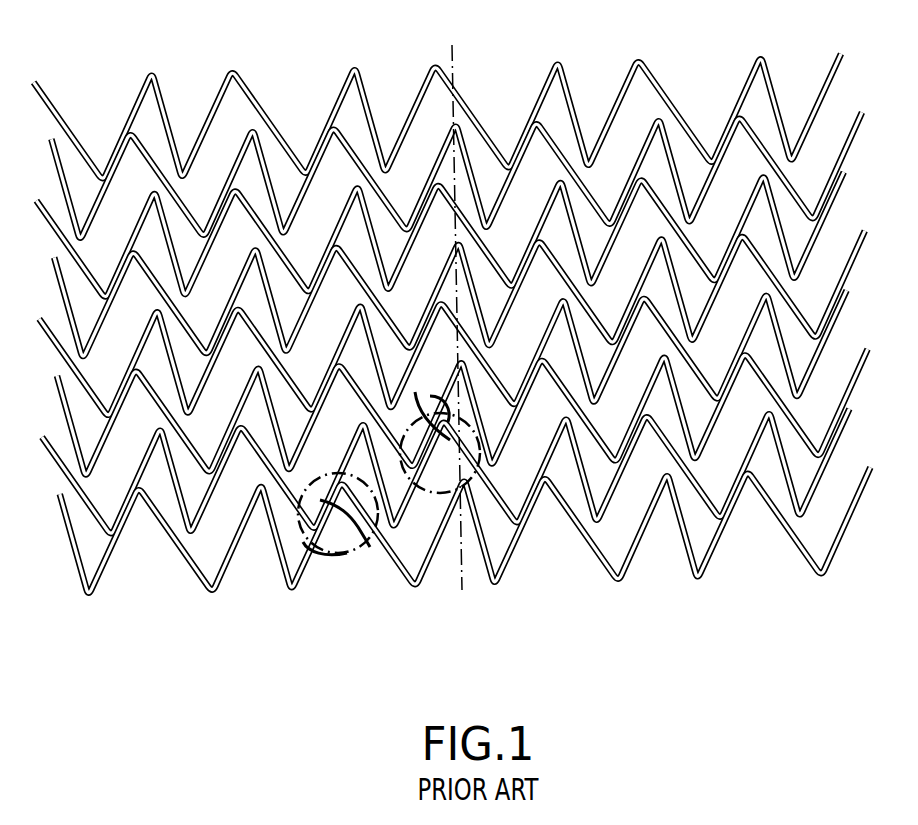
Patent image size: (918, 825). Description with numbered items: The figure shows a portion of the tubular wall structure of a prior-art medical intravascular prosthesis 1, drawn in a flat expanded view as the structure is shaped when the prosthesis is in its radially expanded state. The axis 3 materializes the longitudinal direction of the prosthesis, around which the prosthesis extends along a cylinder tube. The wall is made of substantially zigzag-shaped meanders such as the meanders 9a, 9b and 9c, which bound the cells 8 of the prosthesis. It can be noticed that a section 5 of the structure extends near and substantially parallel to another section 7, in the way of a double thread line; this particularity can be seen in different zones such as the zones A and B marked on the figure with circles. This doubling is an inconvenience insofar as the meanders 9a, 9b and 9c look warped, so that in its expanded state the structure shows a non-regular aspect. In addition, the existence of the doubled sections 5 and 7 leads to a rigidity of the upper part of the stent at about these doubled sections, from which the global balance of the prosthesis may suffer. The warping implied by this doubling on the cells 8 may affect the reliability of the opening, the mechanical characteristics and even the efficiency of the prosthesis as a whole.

The medical intravascular prosthesis 1 is at (452, 337).
The axis 3 is at (450, 100).
The section of the structure 5 is at (325, 263).
The another section 7 is at (330, 558).
The cells 8 is at (646, 390).
The meander 9a is at (138, 106).
The meander 9b is at (448, 155).
The meander 9c is at (647, 275).
The zone A is at (332, 560).
The zone B is at (428, 498).